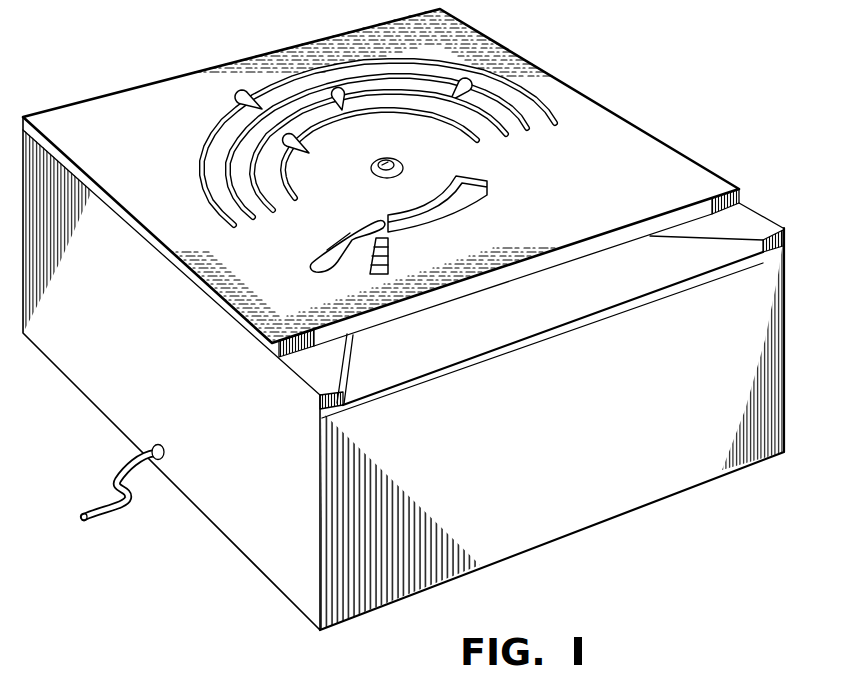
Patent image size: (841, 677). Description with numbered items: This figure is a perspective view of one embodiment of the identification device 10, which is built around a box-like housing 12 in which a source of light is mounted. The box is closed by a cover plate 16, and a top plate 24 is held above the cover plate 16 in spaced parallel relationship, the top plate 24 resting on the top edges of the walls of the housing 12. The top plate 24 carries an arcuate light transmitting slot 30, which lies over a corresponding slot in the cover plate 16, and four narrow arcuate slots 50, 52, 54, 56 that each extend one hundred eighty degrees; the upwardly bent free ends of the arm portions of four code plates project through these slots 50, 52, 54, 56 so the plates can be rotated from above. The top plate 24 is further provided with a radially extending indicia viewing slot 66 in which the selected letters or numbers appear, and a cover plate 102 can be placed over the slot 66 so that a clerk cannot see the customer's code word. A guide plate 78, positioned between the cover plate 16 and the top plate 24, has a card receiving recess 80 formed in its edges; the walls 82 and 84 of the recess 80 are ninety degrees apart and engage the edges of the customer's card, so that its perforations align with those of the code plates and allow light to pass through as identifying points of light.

The identification device 10 is at (407, 319).
The box-like housing 12 is at (633, 491).
The cover plate 16 is at (410, 392).
The top plate 24 is at (577, 197).
The arcuate light transmitting slot 30 is at (462, 203).
The arcuate slot 50 is at (476, 143).
The arcuate slot 52 is at (501, 137).
The arcuate slot 54 is at (528, 130).
The arcuate slot 56 is at (556, 124).
The indicia viewing slot 66 is at (390, 253).
The guide plate 78 is at (745, 214).
The card receiving recess 80 is at (517, 311).
The wall of recess 82 is at (355, 358).
The wall of recess 84 is at (700, 228).
The cover plate 102 is at (318, 266).